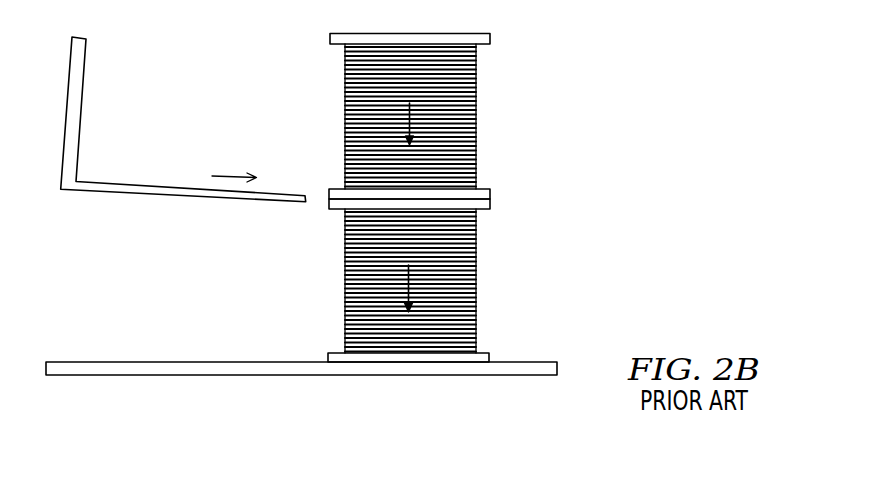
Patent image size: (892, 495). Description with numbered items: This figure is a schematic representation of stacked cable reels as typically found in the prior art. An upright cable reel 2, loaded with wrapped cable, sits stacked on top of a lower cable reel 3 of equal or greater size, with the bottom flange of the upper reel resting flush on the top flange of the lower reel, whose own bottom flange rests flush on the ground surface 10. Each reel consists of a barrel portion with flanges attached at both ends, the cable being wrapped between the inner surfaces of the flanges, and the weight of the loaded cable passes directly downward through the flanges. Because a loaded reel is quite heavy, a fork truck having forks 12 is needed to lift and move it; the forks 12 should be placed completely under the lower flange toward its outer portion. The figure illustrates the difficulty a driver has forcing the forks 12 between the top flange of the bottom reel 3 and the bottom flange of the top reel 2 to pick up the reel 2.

The cable reel 2 is at (428, 99).
The lower cable reel 3 is at (428, 280).
The ground surface 10 is at (170, 361).
The forks 12 is at (118, 185).